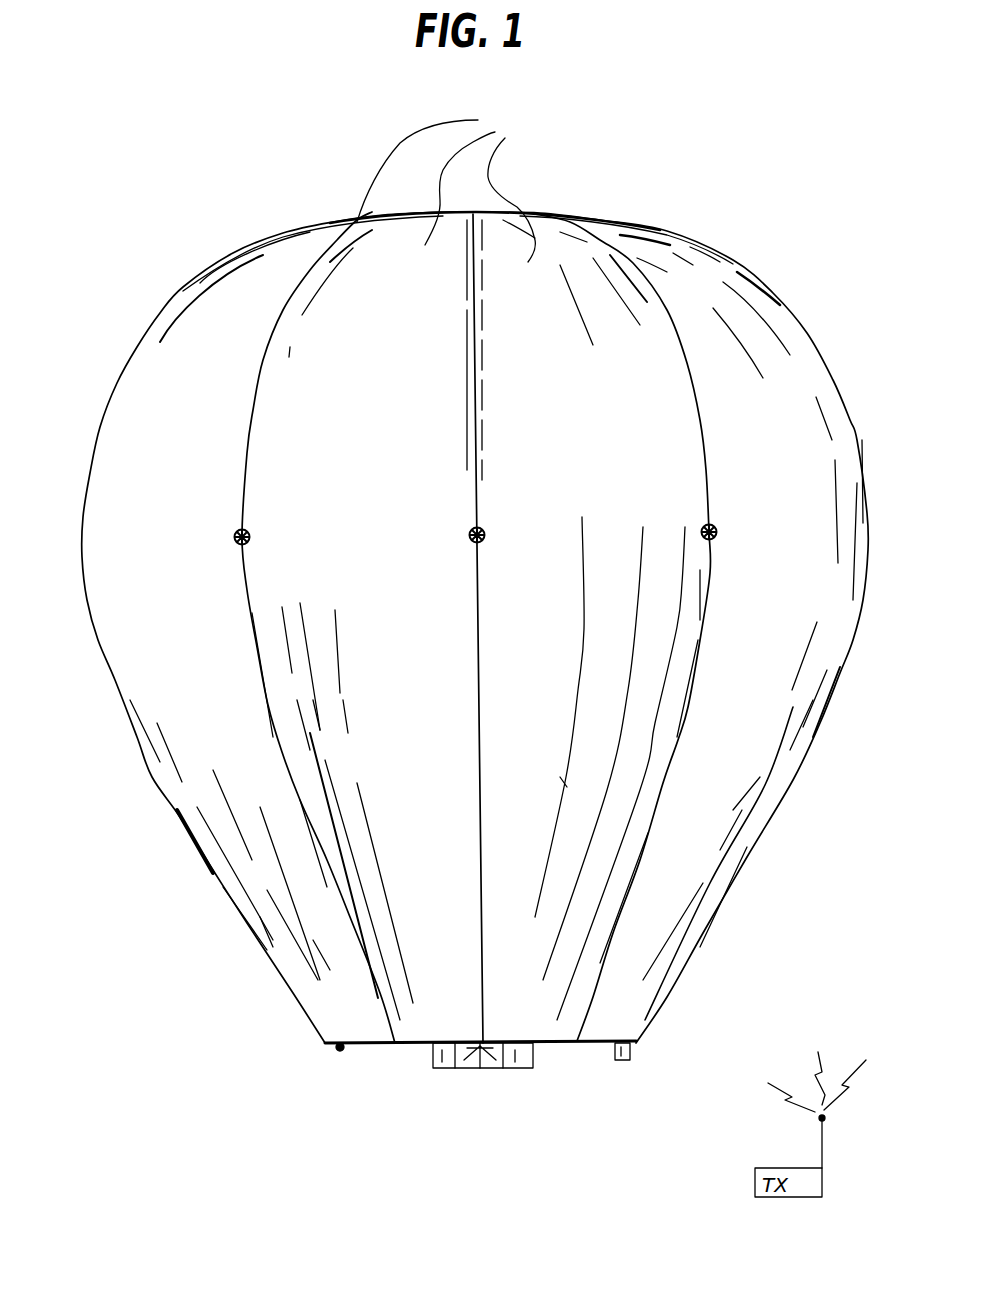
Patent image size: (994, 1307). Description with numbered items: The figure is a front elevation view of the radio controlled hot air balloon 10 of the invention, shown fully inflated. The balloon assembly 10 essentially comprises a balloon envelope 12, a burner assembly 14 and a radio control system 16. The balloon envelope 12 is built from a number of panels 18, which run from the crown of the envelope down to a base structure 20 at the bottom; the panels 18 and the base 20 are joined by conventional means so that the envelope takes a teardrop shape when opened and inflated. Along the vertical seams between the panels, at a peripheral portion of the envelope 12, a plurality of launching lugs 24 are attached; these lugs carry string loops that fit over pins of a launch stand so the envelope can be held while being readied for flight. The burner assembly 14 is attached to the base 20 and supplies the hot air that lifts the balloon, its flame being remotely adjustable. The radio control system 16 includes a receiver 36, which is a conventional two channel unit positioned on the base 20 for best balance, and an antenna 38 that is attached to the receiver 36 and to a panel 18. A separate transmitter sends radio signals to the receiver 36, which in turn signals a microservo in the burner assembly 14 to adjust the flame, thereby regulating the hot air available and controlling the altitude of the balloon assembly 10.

The radio controlled hot air balloon 10 is at (770, 251).
The balloon envelope 12 is at (153, 777).
The burner assembly 14 is at (433, 1068).
The radio control system 16 is at (613, 1062).
The panels 18 is at (446, 189).
The base structure 20 is at (378, 1053).
The launching lugs 24 is at (235, 531).
The receiver 36 is at (632, 1050).
The antenna 38 is at (753, 832).